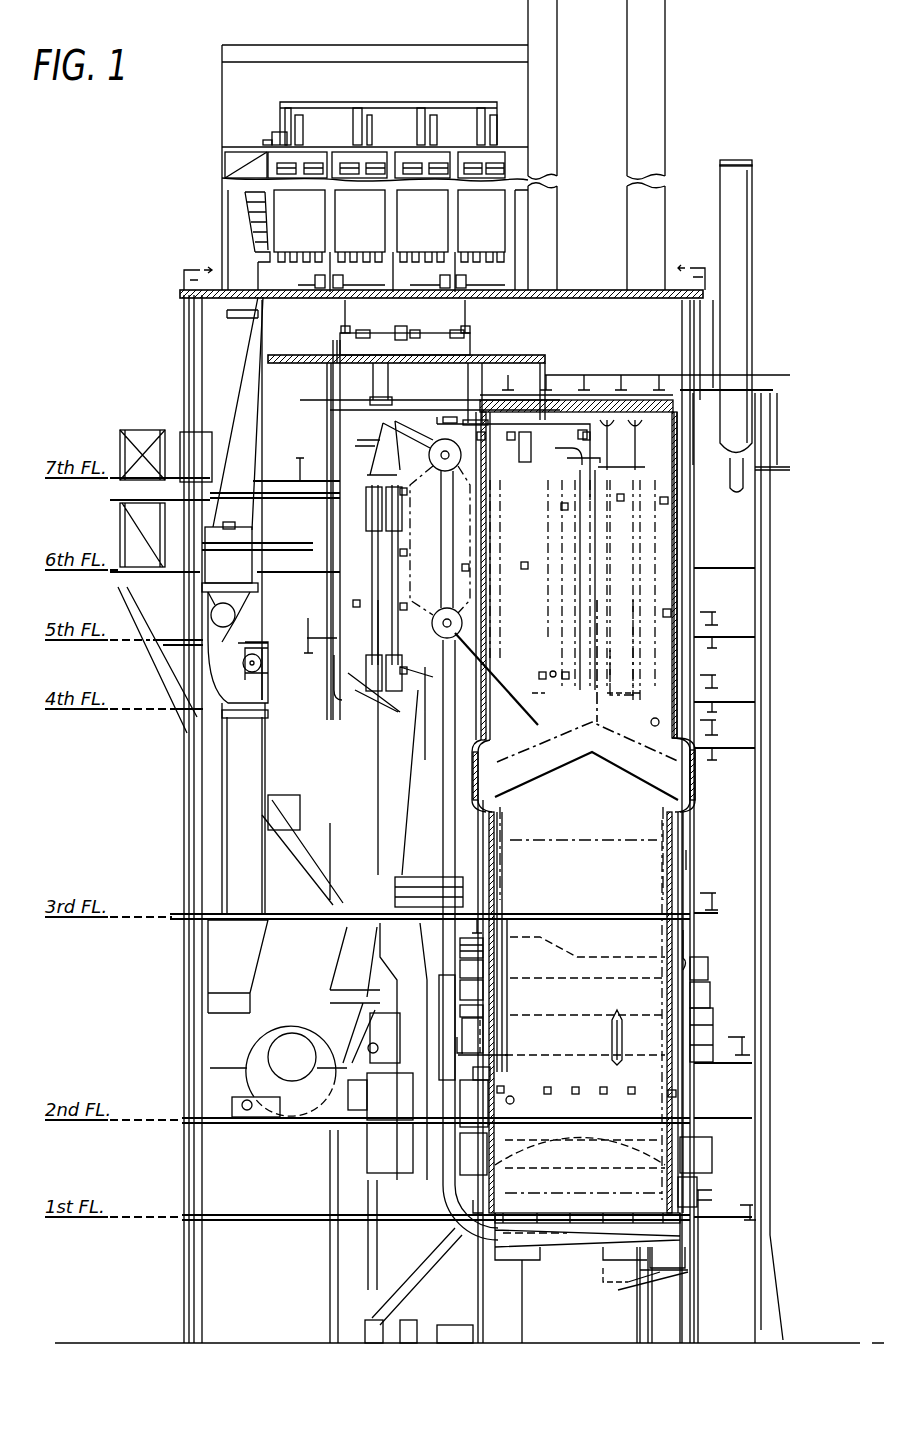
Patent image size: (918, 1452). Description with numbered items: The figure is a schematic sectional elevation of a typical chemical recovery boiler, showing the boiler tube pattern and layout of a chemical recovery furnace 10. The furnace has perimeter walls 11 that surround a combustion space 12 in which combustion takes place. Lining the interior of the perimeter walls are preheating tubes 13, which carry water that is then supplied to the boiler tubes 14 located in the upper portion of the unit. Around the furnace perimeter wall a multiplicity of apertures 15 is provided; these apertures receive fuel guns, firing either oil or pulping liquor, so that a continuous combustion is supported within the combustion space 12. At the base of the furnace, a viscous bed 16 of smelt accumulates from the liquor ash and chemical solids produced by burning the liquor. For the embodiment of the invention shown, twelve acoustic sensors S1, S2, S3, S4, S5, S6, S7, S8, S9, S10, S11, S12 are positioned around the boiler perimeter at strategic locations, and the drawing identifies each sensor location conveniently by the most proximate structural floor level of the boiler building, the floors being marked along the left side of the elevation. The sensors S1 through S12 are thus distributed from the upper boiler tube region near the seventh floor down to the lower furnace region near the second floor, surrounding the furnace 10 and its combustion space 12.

The chemical recovery furnace 10 is at (731, 815).
The perimeter walls 11 is at (693, 860).
The combustion space 12 is at (568, 827).
The preheating tubes 13 is at (690, 945).
The boiler tubes 14 is at (623, 590).
The apertures 15 is at (631, 1094).
The viscous bed of smelt 16 is at (560, 1150).
The acoustic sensor S1 is at (568, 507).
The acoustic sensor S2 is at (668, 500).
The acoustic sensor S3 is at (622, 502).
The acoustic sensor S4 is at (407, 552).
The acoustic sensor S5 is at (462, 569).
The acoustic sensor S6 is at (521, 568).
The acoustic sensor S7 is at (671, 612).
The acoustic sensor S8 is at (353, 604).
The acoustic sensor S9 is at (540, 679).
The acoustic sensor S10 is at (563, 690).
The acoustic sensor S11 is at (503, 1088).
The acoustic sensor S12 is at (677, 1093).